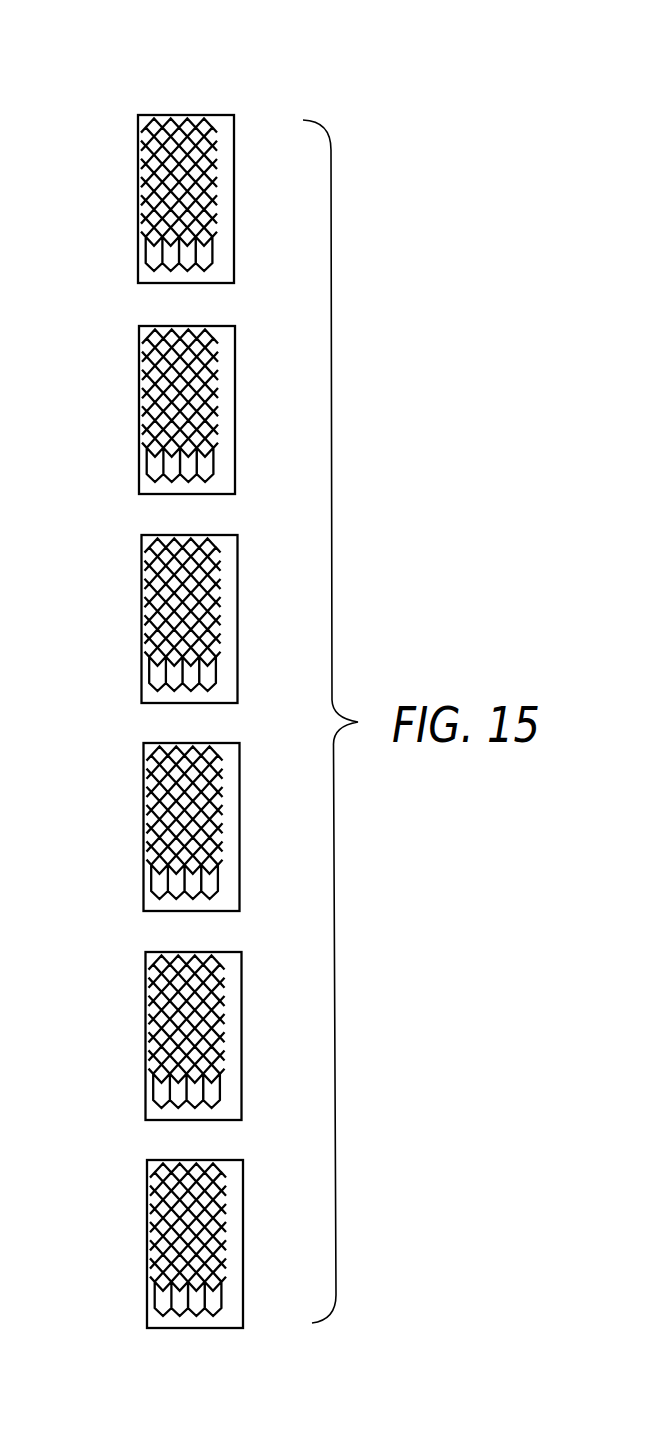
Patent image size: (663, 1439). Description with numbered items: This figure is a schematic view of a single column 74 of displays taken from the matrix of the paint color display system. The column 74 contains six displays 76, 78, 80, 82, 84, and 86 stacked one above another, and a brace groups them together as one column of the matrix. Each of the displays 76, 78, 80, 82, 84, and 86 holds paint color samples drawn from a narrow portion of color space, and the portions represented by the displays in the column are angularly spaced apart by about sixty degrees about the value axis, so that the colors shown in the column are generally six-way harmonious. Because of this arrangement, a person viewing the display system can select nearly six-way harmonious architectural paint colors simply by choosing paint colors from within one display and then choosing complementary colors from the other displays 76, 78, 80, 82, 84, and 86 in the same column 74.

The column 74 is at (185, 82).
The display 76 is at (138, 150).
The display 78 is at (139, 360).
The display 80 is at (142, 570).
The display 82 is at (144, 776).
The display 84 is at (146, 986).
The display 86 is at (147, 1192).